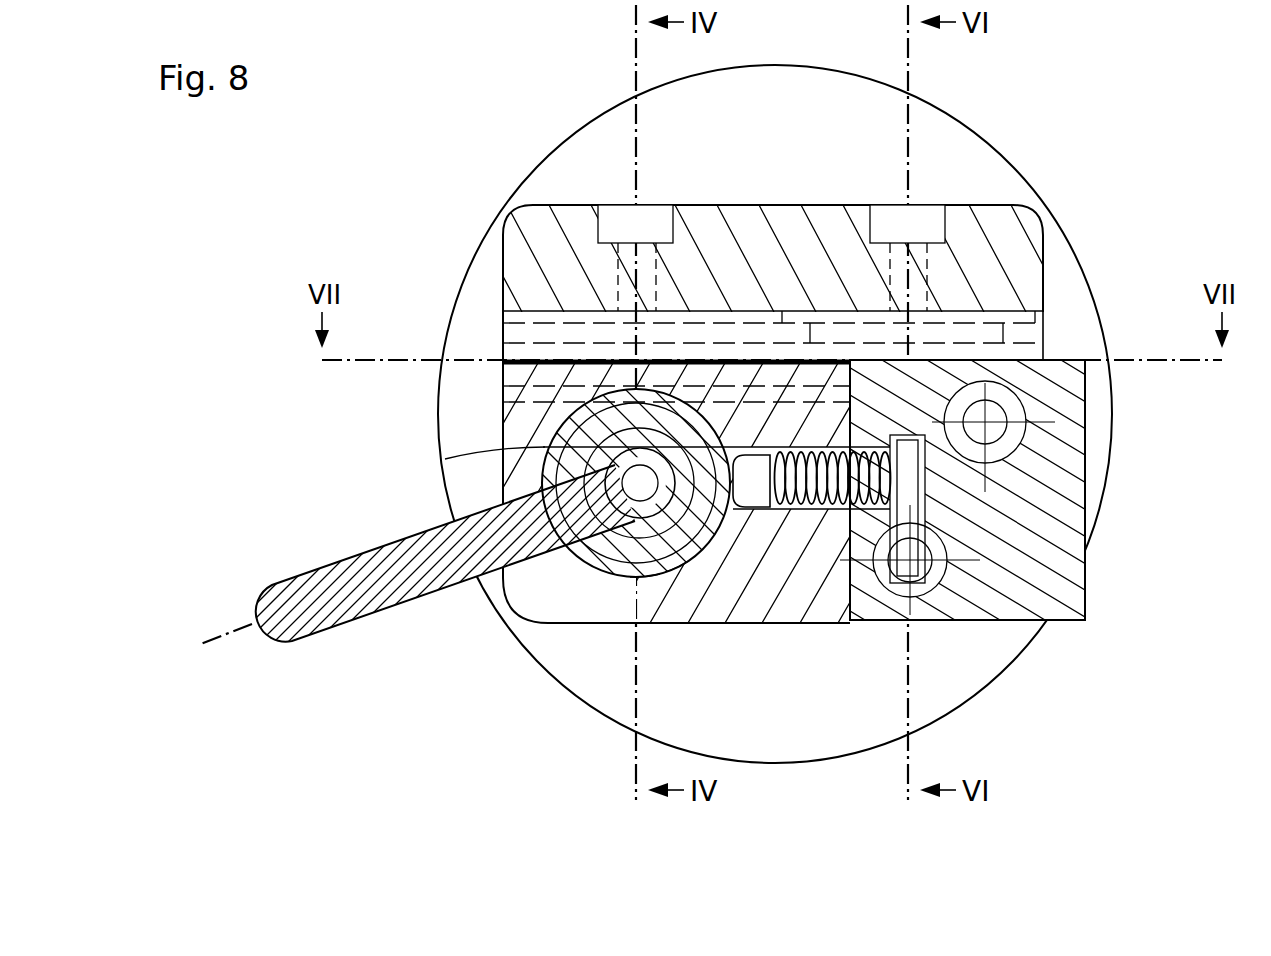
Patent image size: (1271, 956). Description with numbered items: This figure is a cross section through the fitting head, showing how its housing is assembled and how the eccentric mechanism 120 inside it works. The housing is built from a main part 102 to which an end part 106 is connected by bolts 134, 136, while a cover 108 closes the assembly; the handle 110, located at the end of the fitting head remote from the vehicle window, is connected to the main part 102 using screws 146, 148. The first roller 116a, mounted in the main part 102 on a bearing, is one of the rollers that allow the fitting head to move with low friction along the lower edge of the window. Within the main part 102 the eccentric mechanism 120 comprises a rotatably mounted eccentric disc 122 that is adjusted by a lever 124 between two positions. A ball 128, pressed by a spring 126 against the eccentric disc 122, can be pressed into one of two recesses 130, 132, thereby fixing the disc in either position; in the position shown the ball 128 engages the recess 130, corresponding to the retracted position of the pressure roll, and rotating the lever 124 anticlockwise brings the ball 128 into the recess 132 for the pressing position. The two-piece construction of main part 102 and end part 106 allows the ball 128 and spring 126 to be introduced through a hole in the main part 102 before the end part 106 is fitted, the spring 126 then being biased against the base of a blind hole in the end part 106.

The main part 102 is at (507, 424).
The end part 106 is at (1075, 620).
The cover 108 is at (1015, 222).
The handle 110 is at (950, 130).
The first roller 116a is at (1023, 316).
The eccentric mechanism 120 is at (480, 578).
The eccentric disc 122 is at (447, 457).
The lever 124 is at (320, 576).
The spring 126 is at (790, 510).
The ball 128 is at (760, 520).
The recess 130 is at (703, 585).
The recess 132 is at (640, 572).
The bolt 134 is at (892, 582).
The bolt 136 is at (1040, 403).
The screw 146 is at (603, 218).
The screw 148 is at (870, 214).